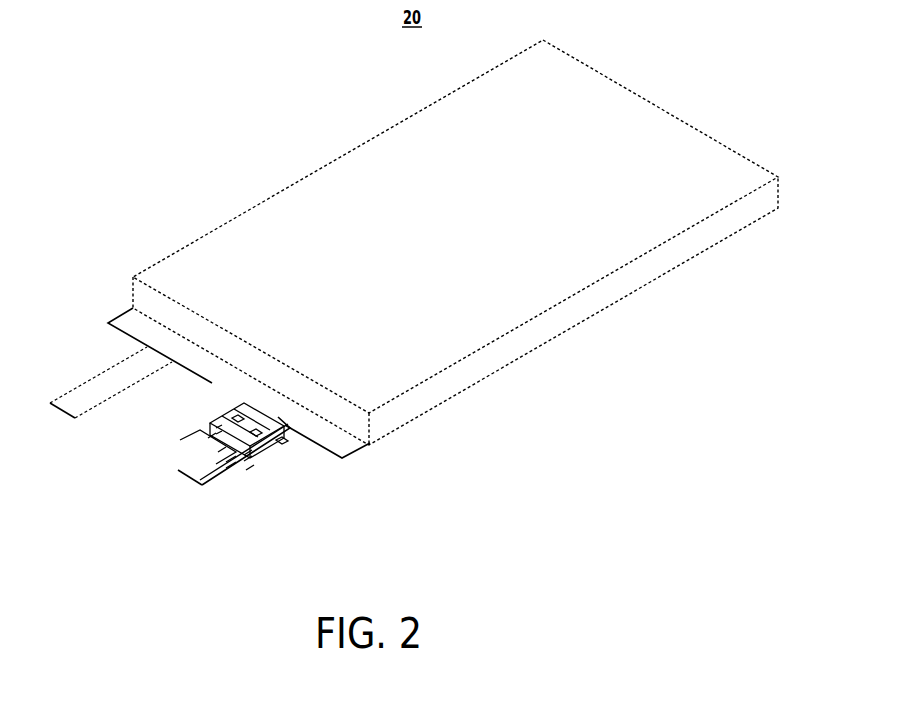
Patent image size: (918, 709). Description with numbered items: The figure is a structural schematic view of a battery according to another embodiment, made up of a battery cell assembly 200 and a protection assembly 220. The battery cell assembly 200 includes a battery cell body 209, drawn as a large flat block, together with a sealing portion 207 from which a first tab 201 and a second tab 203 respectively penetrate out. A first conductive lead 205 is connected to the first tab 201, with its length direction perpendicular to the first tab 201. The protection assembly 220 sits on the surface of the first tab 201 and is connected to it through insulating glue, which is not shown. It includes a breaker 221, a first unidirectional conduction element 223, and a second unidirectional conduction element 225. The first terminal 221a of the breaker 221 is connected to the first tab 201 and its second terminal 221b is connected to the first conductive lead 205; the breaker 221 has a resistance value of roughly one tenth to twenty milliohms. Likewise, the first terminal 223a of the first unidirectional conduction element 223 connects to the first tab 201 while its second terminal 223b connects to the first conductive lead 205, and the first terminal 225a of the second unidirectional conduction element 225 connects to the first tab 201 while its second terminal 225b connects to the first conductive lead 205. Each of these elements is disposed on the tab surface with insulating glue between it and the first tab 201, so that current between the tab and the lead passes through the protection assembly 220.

The battery cell assembly 200 is at (339, 153).
The first tab 201 is at (233, 452).
The second tab 203 is at (77, 401).
The first conductive lead 205 is at (228, 486).
The sealing portion 207 is at (108, 323).
The battery cell body 209 is at (480, 363).
The protection assembly 220 is at (207, 413).
The breaker 221 is at (256, 430).
The first terminal of the breaker 221a is at (236, 418).
The second terminal of the breaker 221b is at (282, 437).
The first unidirectional conduction element 223 is at (232, 466).
The first terminal of the first unidirectional conduction element 223a is at (222, 424).
The second terminal of the first unidirectional conduction element 223b is at (247, 462).
The second unidirectional conduction element 225 is at (224, 460).
The first terminal of the second unidirectional conduction element 225a is at (214, 434).
The second terminal of the second unidirectional conduction element 225b is at (250, 475).